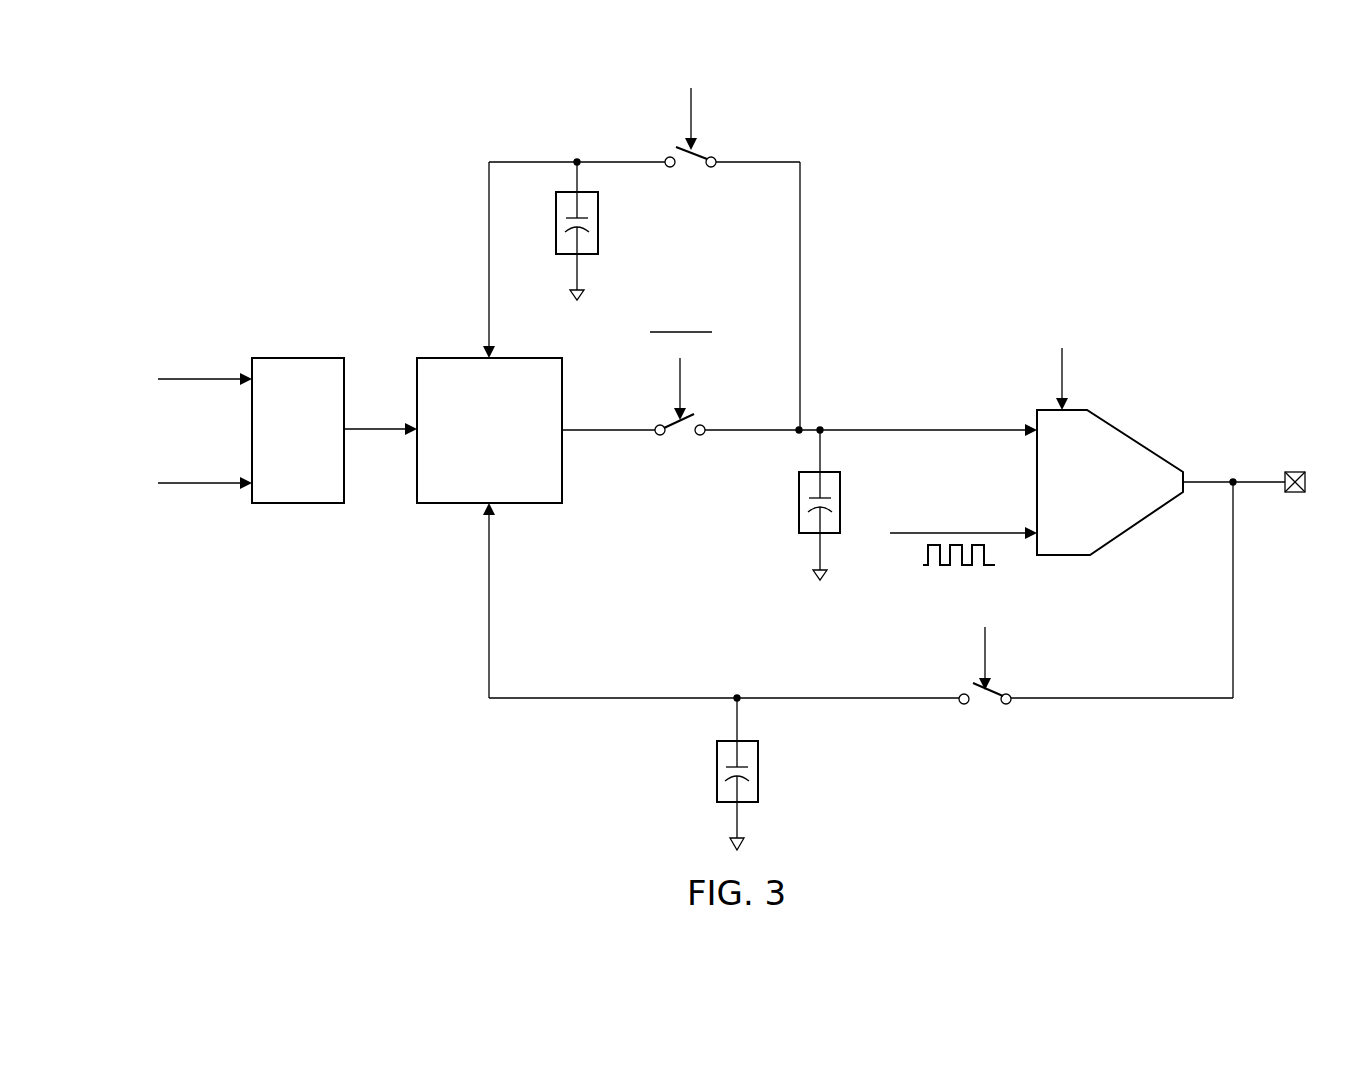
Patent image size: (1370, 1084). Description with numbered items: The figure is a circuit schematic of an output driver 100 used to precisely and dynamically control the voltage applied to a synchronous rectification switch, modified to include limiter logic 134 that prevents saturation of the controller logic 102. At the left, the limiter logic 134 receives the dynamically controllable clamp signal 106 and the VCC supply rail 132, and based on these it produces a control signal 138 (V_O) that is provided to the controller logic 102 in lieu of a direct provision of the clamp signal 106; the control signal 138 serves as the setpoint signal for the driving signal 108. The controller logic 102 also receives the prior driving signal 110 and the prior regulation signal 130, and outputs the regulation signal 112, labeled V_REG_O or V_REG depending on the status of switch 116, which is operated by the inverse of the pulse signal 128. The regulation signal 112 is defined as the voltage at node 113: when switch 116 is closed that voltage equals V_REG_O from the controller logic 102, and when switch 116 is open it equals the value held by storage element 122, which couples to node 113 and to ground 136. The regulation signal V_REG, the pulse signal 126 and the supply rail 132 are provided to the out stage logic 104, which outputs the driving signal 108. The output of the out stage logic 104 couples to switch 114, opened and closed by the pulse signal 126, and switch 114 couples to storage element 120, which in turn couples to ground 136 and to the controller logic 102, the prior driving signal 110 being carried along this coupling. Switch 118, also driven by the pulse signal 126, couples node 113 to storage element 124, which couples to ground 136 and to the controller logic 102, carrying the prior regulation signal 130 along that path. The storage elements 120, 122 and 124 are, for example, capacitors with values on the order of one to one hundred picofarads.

The output driver 100 is at (1084, 188).
The controller logic 102 is at (470, 472).
The out stage logic 104 is at (1135, 437).
The dynamically controllable clamp signal 106 is at (205, 383).
The driving signal 108 is at (1258, 474).
The prior driving signal 110 is at (613, 704).
The regulation signal 112 is at (607, 435).
The node 113 is at (804, 424).
The switch 114 is at (992, 705).
The switch 116 is at (672, 437).
The switch 118 is at (700, 168).
The storage element 120 is at (717, 768).
The storage element 122 is at (799, 500).
The storage element 124 is at (556, 222).
The pulse signal 126 is at (690, 118).
The inverse of the pulse signal 128 is at (678, 390).
The prior regulation signal 130 is at (488, 260).
The VCC power supply rail 132 is at (205, 487).
The limiter logic 134 is at (279, 472).
The ground connection 136 is at (570, 274).
The control signal 138 is at (380, 434).